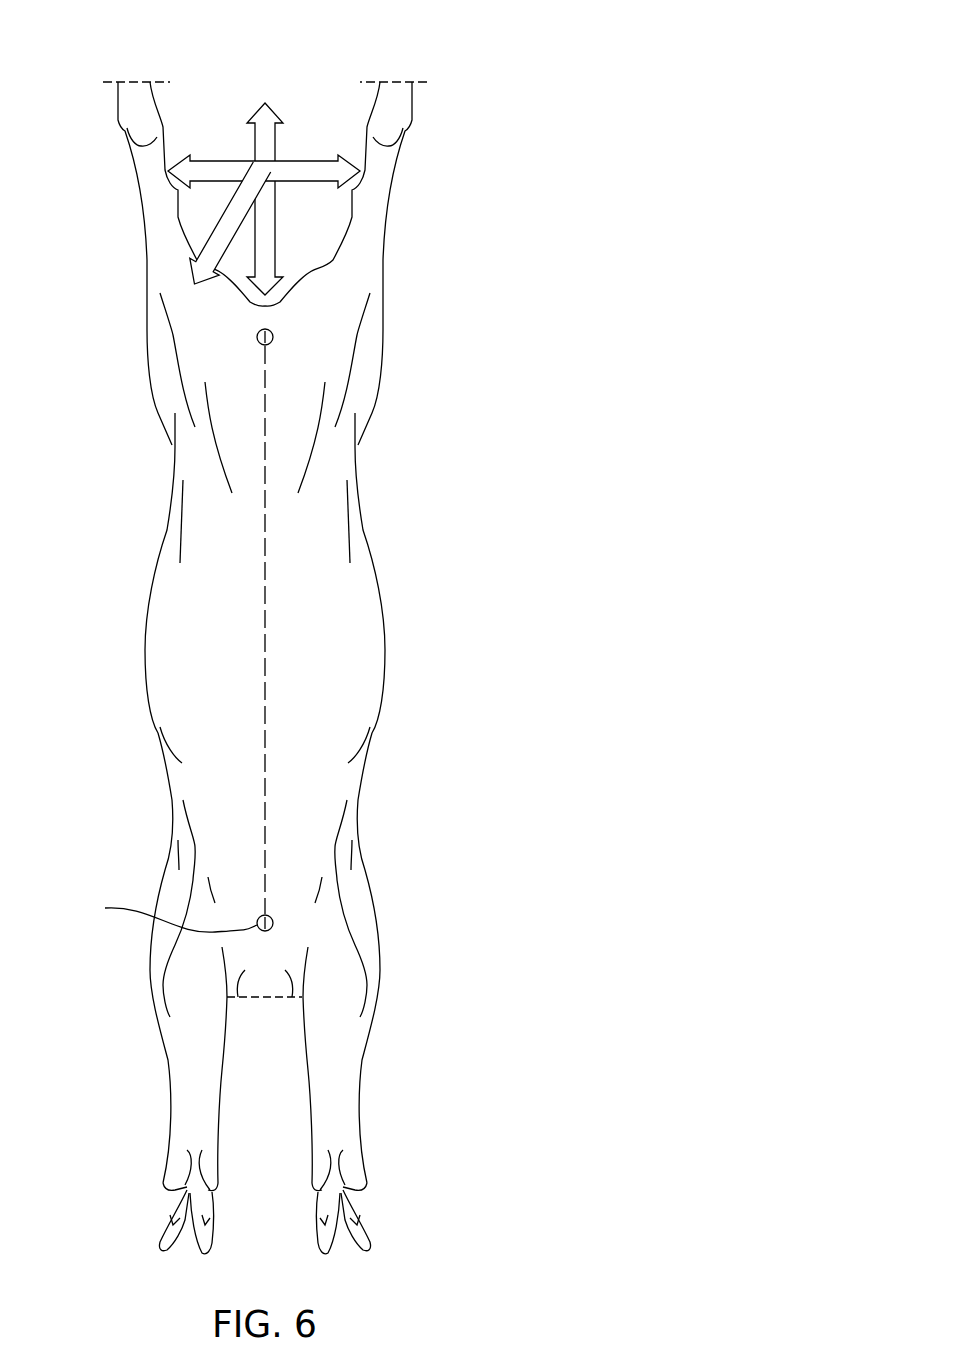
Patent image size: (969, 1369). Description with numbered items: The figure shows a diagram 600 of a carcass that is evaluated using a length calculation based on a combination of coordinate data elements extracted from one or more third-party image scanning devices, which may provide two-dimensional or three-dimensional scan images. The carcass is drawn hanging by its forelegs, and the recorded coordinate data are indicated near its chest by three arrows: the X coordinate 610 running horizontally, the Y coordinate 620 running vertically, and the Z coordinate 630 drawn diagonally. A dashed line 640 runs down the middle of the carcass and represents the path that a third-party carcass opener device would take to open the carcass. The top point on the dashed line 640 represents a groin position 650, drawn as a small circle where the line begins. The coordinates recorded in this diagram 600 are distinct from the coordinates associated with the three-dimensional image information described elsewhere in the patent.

The diagram 600 is at (523, 55).
The X coordinate 610 is at (203, 167).
The Y coordinate 620 is at (267, 223).
The Z coordinate 630 is at (213, 254).
The dashed line 640 is at (265, 425).
The groin position 650 is at (257, 338).